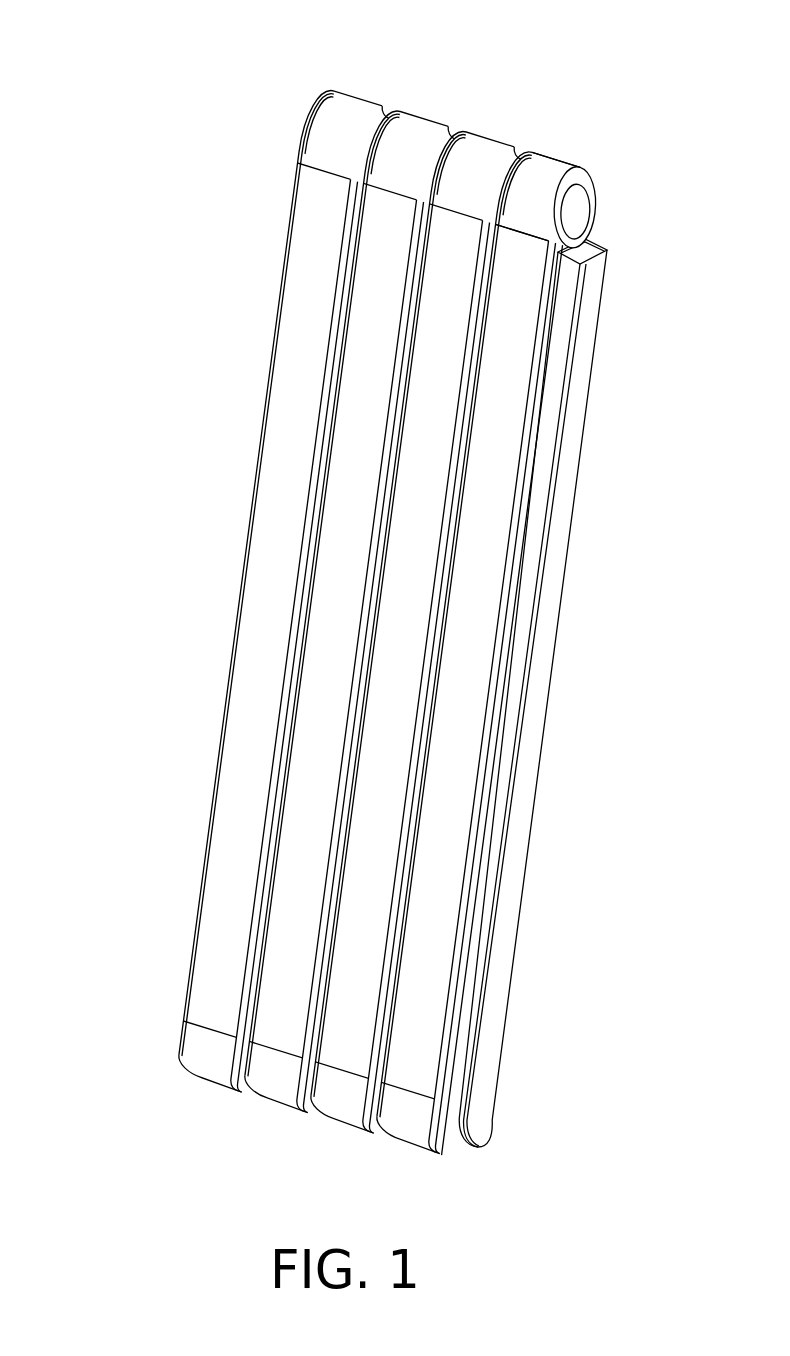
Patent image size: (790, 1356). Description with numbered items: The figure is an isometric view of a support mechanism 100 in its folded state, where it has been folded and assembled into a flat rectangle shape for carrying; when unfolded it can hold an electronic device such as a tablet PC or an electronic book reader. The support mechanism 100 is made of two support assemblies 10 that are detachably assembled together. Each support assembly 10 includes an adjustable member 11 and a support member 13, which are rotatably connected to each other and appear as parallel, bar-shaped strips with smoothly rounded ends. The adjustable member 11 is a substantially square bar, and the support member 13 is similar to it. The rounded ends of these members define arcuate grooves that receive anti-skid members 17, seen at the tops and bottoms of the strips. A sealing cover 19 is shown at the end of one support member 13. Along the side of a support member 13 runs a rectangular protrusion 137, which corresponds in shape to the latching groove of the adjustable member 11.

The support mechanism 100 is at (333, 42).
The support assembly 10 is at (488, 130).
The adjustable member 11 is at (347, 1047).
The support member 13 is at (288, 1018).
The anti-skid member 17 is at (538, 172).
The sealing cover 19 is at (572, 208).
The protrusion 137 is at (556, 548).